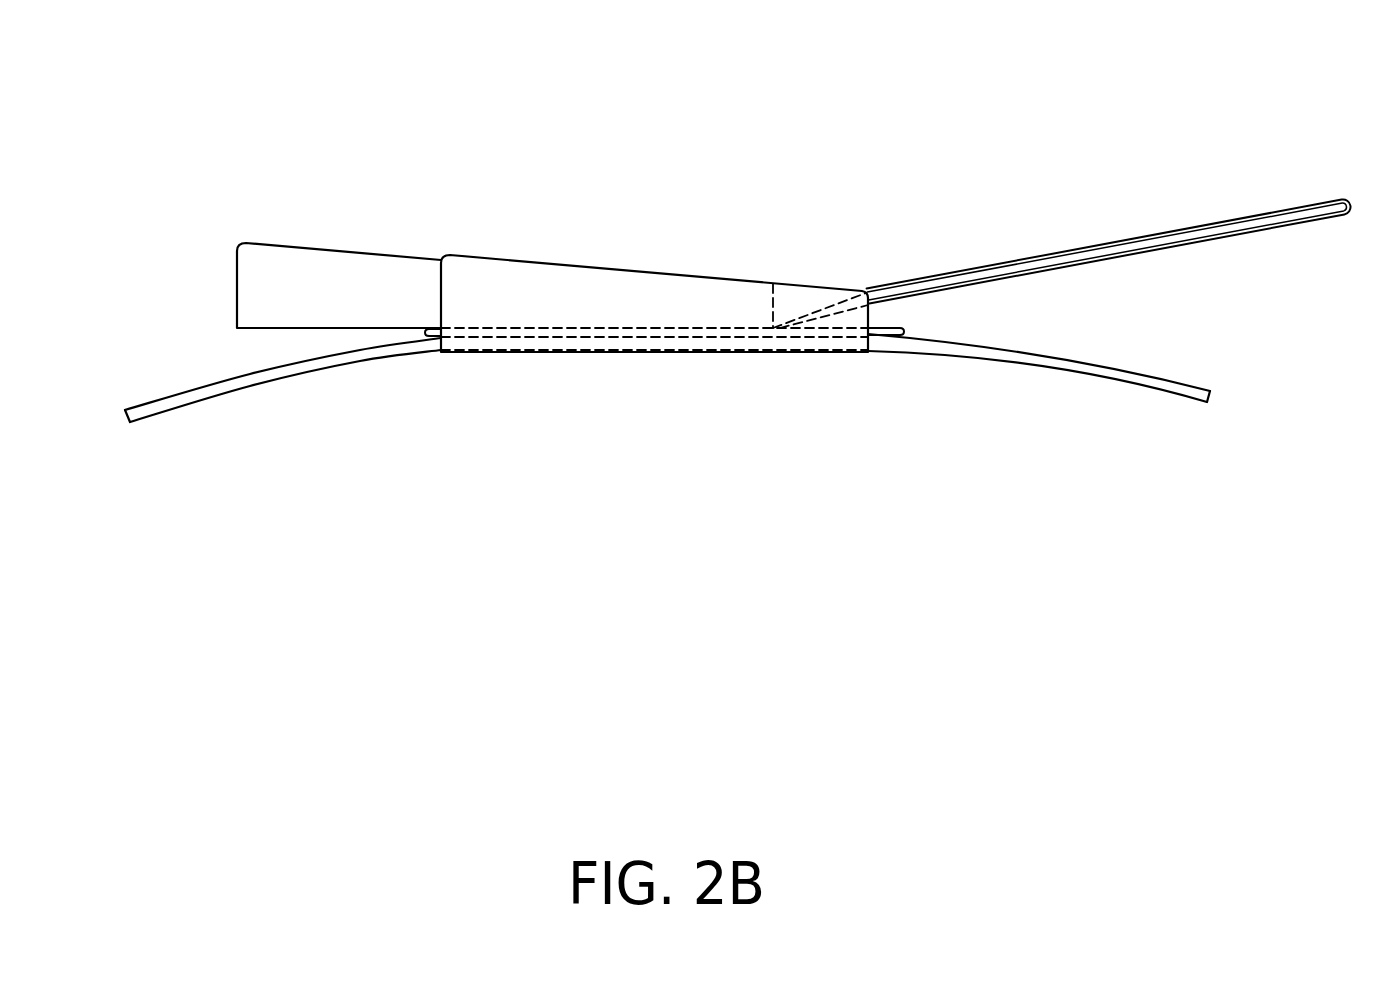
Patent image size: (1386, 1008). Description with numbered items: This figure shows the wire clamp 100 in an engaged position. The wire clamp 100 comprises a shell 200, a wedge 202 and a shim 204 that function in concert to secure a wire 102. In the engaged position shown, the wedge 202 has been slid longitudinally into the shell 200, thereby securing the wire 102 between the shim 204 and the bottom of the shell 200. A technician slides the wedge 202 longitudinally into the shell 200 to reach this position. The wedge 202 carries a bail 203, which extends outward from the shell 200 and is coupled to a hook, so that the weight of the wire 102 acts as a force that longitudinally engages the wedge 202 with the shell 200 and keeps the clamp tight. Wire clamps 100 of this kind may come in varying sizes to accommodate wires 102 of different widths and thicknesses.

The wire clamp 100 is at (595, 128).
The wire 102 is at (250, 383).
The shell 200 is at (655, 353).
The wedge 202 is at (290, 245).
The bail 203 is at (1090, 243).
The shim 204 is at (893, 325).